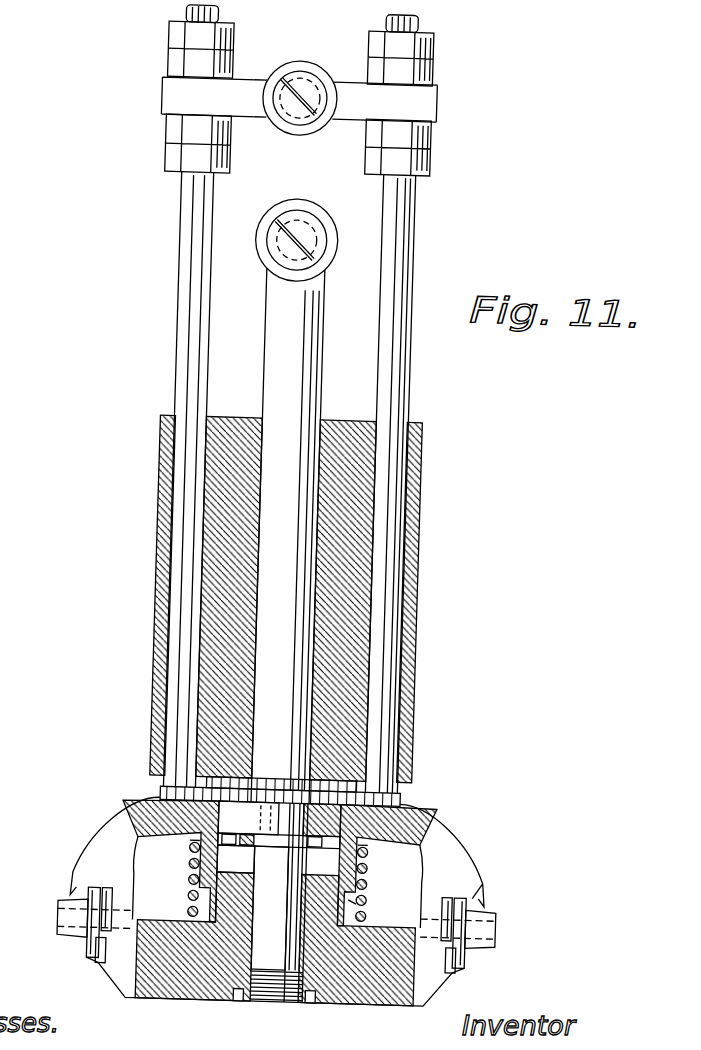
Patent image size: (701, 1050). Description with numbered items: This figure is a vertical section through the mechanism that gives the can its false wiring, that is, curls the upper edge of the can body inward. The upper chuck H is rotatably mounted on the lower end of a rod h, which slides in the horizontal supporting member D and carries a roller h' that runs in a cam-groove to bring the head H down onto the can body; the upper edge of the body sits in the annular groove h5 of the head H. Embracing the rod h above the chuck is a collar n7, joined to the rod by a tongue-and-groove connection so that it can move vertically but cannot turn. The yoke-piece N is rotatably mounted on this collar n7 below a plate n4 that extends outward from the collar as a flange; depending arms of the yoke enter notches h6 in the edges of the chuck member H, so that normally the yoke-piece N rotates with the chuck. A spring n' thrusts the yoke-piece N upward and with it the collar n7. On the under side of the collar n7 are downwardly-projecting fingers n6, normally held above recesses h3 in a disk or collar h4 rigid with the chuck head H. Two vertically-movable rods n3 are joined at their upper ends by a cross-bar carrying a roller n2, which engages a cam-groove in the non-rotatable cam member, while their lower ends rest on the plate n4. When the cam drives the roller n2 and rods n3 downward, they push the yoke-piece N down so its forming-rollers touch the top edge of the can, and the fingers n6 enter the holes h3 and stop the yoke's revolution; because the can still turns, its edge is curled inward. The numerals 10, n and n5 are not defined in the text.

The roller n2 is at (300, 56).
The roller h' is at (297, 227).
The vertically-movable rods n3 is at (176, 347).
The rod h is at (288, 535).
The horizontal supporting member D is at (427, 560).
The plate n4 is at (410, 794).
The yoke-piece N is at (277, 901).
The upper chuck H is at (378, 996).
The disk or collar h4 is at (296, 870).
The collar n7 is at (279, 838).
The recesses h3 is at (241, 862).
The fingers n6 is at (382, 862).
The spring n' is at (372, 910).
The coil 10 is at (199, 848).
The bolt n is at (270, 908).
The annular groove h5 is at (105, 951).
The notches h6 is at (275, 963).
The boss n5 is at (484, 893).